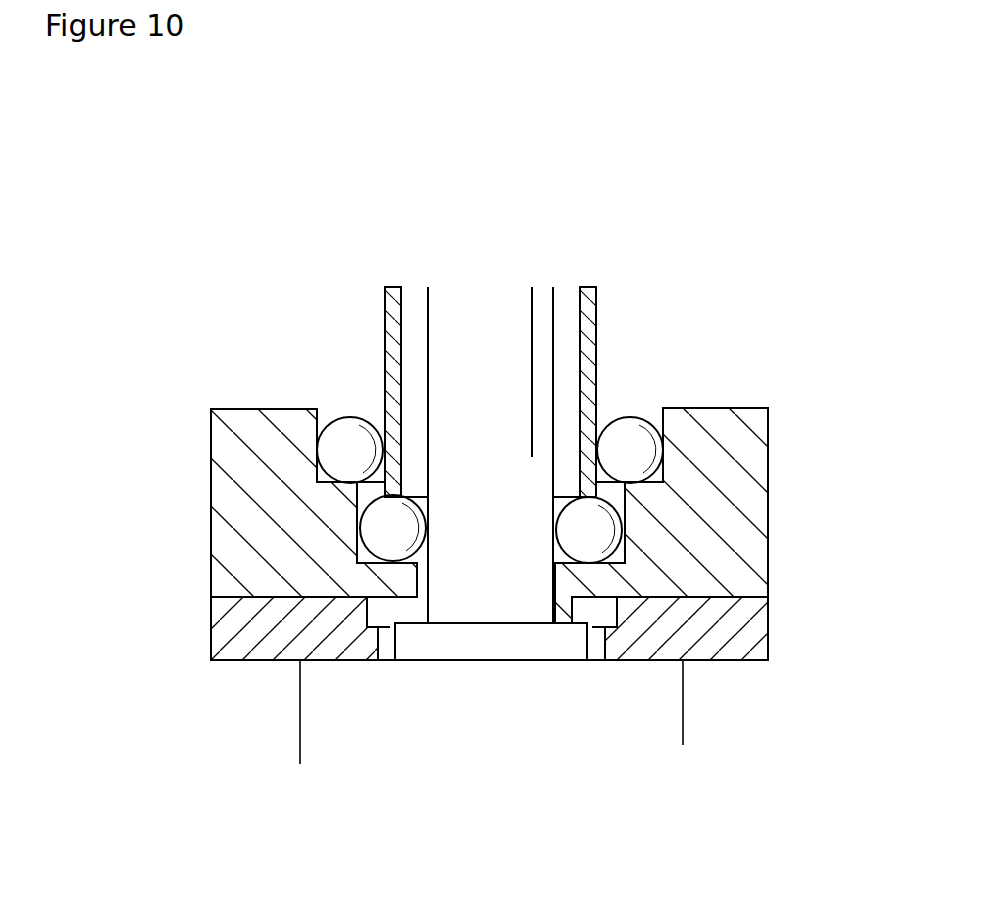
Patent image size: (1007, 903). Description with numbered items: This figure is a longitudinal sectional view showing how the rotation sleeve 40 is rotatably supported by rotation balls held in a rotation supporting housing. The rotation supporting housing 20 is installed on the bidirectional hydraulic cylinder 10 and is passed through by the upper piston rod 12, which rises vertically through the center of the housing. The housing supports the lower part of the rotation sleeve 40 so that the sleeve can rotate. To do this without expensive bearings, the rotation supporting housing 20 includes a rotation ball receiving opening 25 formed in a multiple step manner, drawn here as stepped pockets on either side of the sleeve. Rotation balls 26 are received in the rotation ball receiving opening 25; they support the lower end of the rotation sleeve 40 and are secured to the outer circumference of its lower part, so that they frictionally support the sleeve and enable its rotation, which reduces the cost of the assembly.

The bidirectional hydraulic cylinder 10 is at (417, 725).
The upper piston rod 12 is at (487, 335).
The rotation supporting housing 20 is at (241, 462).
The rotation ball receiving opening 25 is at (330, 415).
The rotation balls 26 is at (633, 442).
The rotation sleeve 40 is at (385, 297).